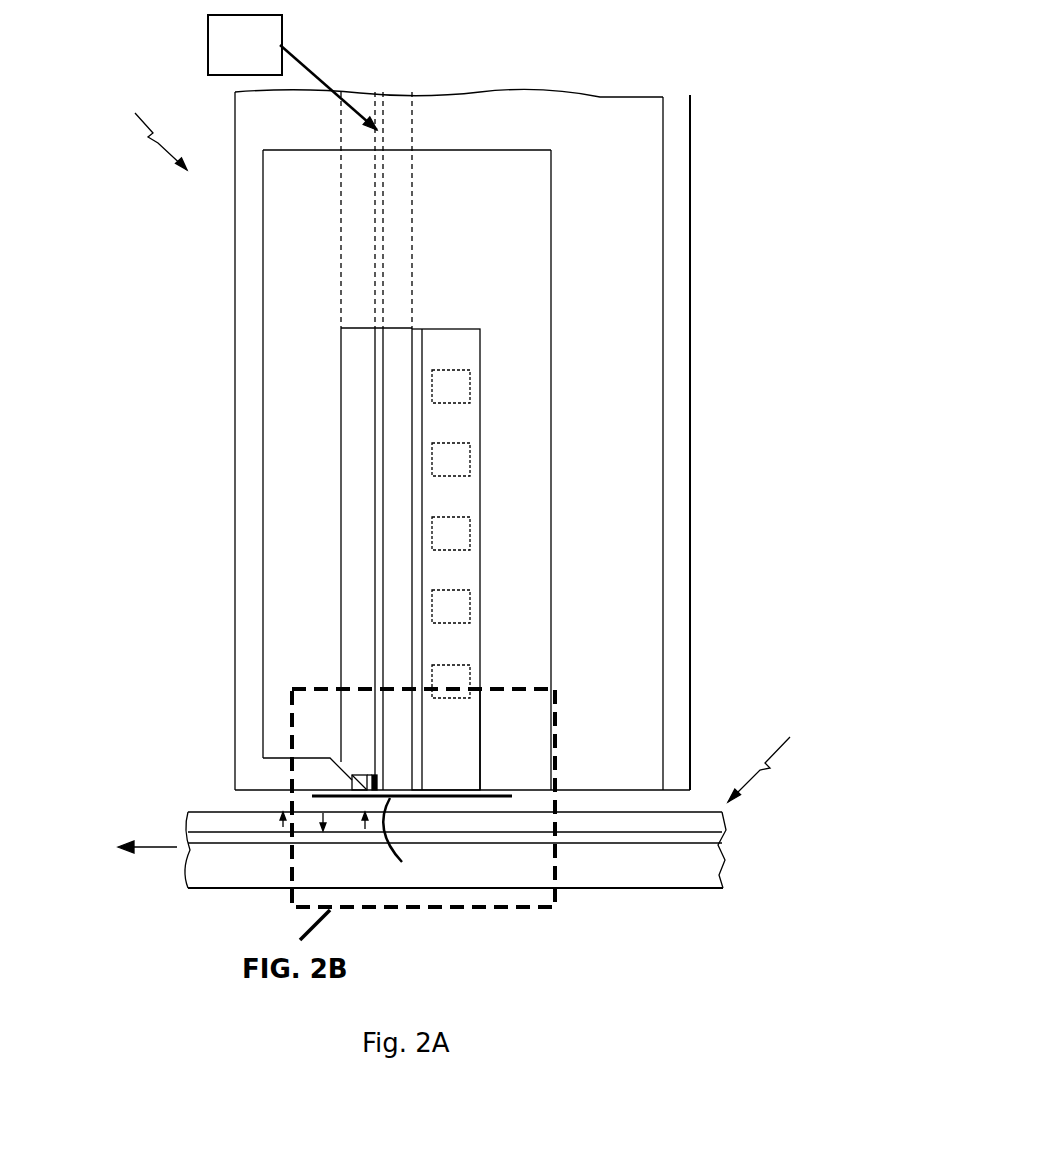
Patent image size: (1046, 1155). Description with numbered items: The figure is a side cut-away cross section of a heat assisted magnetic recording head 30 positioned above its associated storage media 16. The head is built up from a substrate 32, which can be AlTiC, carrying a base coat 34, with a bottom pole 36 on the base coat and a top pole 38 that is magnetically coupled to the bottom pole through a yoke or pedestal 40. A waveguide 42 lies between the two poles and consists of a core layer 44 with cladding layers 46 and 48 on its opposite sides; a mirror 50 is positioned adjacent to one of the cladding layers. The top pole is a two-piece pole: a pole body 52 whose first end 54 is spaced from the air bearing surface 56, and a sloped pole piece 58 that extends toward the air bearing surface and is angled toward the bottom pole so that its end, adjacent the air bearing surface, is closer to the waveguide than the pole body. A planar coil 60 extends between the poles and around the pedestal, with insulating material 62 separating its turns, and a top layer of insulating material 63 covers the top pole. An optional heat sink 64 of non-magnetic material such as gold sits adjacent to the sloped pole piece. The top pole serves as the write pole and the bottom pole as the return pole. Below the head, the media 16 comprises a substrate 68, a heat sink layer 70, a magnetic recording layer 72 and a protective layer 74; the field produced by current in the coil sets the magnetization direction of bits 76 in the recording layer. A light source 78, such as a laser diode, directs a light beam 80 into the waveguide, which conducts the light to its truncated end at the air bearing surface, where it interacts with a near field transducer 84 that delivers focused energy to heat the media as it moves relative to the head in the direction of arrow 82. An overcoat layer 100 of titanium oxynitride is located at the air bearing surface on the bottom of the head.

The storage media 16 is at (495, 804).
The magnetic recording head 30 is at (147, 129).
The substrate 32 is at (677, 108).
The base coat 34 is at (612, 115).
The bottom pole 36 is at (537, 495).
The top pole 38 is at (270, 537).
The pedestal 40 is at (478, 166).
The waveguide 42 is at (415, 84).
The core layer 44 is at (378, 413).
The cladding layer 46 is at (392, 366).
The cladding layer 48 is at (345, 476).
The mirror 50 is at (413, 330).
The pole body 52 is at (270, 652).
The first end 54 is at (270, 770).
The air bearing surface 56 is at (452, 798).
The sloped pole piece 58 is at (355, 776).
The planar coil 60 is at (460, 538).
The insulating material 62 is at (470, 748).
The top layer of insulating material 63 is at (248, 246).
The heat sink 64 is at (364, 772).
The substrate 68 is at (660, 875).
The heat sink layer 70 is at (718, 840).
The magnetic recording layer 72 is at (710, 825).
The protective layer 74 is at (703, 812).
The bits 76 is at (283, 827).
The light source 78 is at (208, 42).
The light beam 80 is at (313, 74).
The arrow 82 is at (153, 847).
The near field transducer 84 is at (385, 787).
The overcoat layer 100 is at (415, 841).